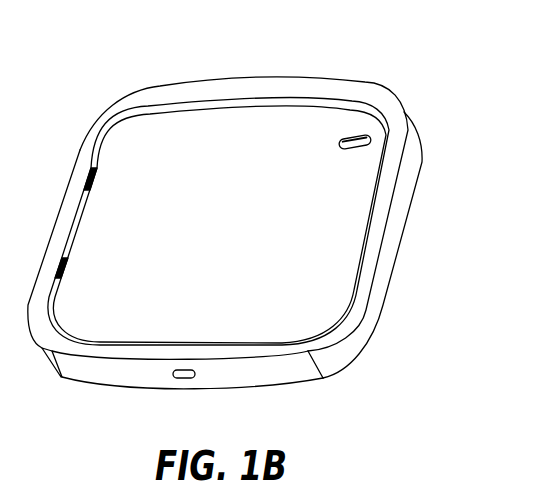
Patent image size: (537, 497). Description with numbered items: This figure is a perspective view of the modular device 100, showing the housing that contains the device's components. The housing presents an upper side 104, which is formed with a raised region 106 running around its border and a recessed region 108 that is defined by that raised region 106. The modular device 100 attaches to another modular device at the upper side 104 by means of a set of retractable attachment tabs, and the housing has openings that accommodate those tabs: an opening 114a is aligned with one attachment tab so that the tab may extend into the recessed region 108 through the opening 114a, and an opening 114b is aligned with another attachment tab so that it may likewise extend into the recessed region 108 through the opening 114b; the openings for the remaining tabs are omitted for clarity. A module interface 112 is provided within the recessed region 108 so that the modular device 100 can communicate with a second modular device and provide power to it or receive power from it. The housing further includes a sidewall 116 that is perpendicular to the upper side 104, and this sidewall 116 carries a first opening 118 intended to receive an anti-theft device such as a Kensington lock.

The modular device 100 is at (328, 48).
The upper side 104 is at (436, 98).
The raised region 106 is at (256, 88).
The recessed region 108 is at (142, 322).
The module interface 112 is at (352, 149).
The opening 114a is at (101, 176).
The opening 114b is at (72, 270).
The sidewall 116 is at (257, 380).
The first opening 118 is at (172, 374).